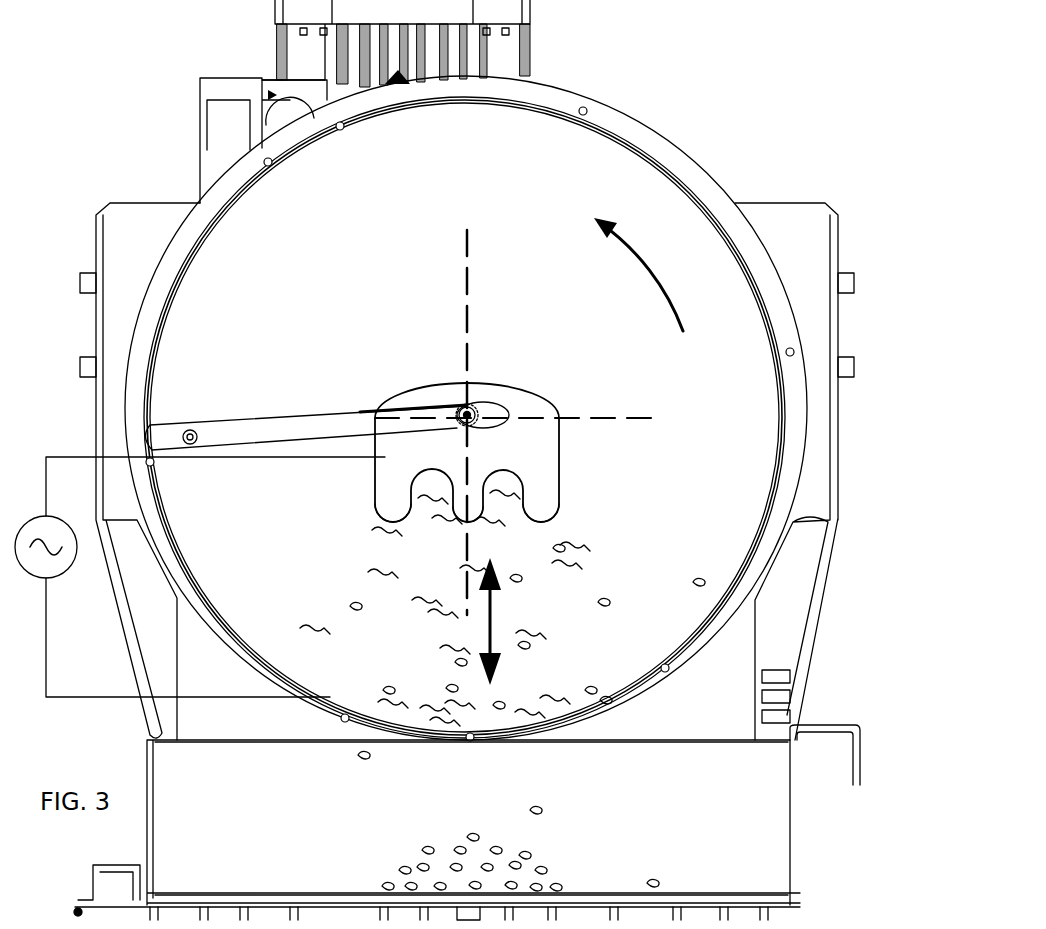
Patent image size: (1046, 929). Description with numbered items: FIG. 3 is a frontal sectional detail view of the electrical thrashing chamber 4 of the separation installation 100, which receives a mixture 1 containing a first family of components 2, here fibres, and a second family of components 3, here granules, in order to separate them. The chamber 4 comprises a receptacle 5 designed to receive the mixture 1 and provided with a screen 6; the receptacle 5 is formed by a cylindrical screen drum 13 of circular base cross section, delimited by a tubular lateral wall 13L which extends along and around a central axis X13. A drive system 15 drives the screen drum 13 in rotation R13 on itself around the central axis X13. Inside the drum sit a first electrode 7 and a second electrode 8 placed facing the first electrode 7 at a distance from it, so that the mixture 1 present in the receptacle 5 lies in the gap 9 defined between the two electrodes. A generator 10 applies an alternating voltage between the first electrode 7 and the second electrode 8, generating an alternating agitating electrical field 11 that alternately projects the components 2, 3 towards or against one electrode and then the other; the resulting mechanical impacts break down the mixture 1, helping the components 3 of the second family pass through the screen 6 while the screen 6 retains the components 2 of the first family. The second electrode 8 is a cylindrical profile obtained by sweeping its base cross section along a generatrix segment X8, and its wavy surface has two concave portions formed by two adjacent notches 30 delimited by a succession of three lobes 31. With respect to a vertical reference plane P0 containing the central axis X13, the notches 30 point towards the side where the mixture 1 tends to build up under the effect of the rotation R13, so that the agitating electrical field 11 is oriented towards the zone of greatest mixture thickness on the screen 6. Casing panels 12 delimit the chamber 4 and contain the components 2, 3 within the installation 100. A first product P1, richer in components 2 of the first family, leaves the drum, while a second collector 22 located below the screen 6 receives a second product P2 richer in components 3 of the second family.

The separation installation 100 is at (707, 57).
The mixture 1 is at (560, 622).
The components of the first family 2 is at (547, 492).
The components of the second family 3 is at (600, 600).
The electrical thrashing chamber 4 is at (237, 158).
The receptacle 5 is at (225, 213).
The screen 6 is at (355, 742).
The first electrode 7 is at (471, 843).
The second electrode 8 is at (420, 443).
The gap 9 is at (465, 647).
The generator 10 is at (50, 575).
The agitating electrical field 11 is at (488, 625).
The casing panels 12 is at (96, 330).
The screen drum 13 is at (469, 419).
The tubular lateral wall 13L is at (687, 183).
The drive system 15 is at (530, 72).
The second collector 22 is at (147, 770).
The notches 30 is at (423, 472).
The lobes 31 is at (397, 515).
The vertical reference plane P0 is at (462, 270).
The first product P1 is at (567, 740).
The second product P2 is at (547, 870).
The rotation R13 is at (648, 274).
The central axis X13 is at (470, 412).
The generatrix segment X8 is at (512, 366).